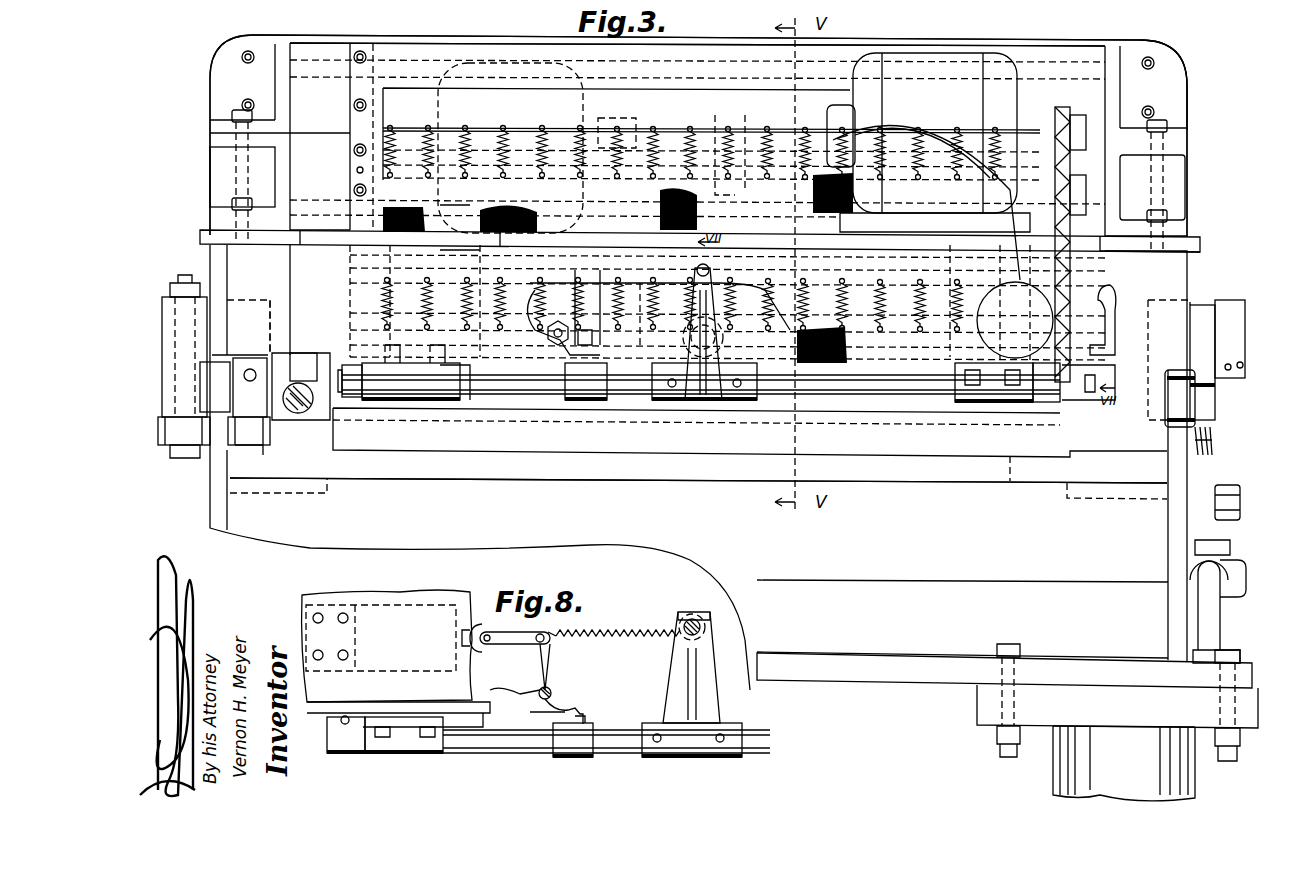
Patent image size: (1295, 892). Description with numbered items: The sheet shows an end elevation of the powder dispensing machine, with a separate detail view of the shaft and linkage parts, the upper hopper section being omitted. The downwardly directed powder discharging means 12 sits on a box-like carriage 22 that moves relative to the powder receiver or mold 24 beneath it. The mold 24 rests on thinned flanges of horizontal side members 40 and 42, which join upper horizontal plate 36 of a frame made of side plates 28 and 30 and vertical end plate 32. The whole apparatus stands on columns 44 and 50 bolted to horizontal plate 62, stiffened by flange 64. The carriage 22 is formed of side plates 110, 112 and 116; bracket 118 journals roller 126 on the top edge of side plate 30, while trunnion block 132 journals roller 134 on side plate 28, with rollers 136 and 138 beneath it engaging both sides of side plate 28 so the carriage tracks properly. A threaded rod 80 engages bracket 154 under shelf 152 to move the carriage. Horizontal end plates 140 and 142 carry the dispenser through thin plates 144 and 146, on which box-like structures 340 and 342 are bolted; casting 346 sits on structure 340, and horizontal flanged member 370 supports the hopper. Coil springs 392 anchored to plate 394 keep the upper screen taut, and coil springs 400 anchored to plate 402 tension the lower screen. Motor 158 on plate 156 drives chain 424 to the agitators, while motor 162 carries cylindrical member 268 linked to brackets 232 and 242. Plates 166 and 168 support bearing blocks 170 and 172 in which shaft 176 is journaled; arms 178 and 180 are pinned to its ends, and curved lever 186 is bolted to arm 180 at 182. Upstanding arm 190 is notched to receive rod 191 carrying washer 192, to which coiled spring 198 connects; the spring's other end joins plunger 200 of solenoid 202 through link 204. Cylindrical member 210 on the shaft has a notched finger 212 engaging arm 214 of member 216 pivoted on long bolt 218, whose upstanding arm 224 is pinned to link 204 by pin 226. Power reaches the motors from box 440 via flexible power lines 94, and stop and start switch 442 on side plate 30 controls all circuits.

In FIG. 3, the powder discharging means 12 is at (1205, 164).
In FIG. 3, the carriage 22 is at (1222, 283).
In FIG. 3, the powder receiver or mold 24 is at (1057, 452).
In FIG. 3, the side plate 28 is at (215, 487).
In FIG. 3, the side plate 30 is at (1190, 465).
In FIG. 3, the vertical end plate 32 is at (868, 576).
In FIG. 3, the upper horizontal plate 36 is at (698, 495).
In FIG. 3, the horizontal side member 40 is at (1050, 470).
In FIG. 3, the horizontal side member 42 is at (355, 465).
In FIG. 3, the column 44 is at (1085, 770).
In FIG. 3, the column 50 is at (1068, 757).
In FIG. 3, the horizontal plate 62 is at (1250, 665).
In FIG. 3, the flange 64 is at (892, 652).
In FIG. 3, the threaded rod 80 is at (300, 410).
In FIG. 3, the flexible power lines 94 is at (1213, 440).
In FIG. 3, the side plate 110 is at (230, 255).
In FIG. 8, the side plate 110 is at (530, 712).
In FIG. 3, the side plate 112 is at (1180, 265).
In FIG. 3, the side plate 116 is at (215, 270).
In FIG. 3, the bracket 118 is at (1226, 335).
In FIG. 3, the roller 126 is at (1212, 430).
In FIG. 3, the trunnion block 132 is at (165, 330).
In FIG. 3, the roller 134 is at (195, 452).
In FIG. 3, the roller 136 is at (160, 432).
In FIG. 3, the roller 138 is at (265, 442).
In FIG. 3, the horizontal end plate 140 is at (1180, 240).
In FIG. 3, the horizontal end plate 142 is at (215, 222).
In FIG. 3, the thin plate 144 is at (1187, 213).
In FIG. 3, the thin plate 146 is at (275, 233).
In FIG. 3, the shelf 152 is at (278, 345).
In FIG. 3, the bracket 154 is at (305, 360).
In FIG. 3, the horizontal plate 156 is at (922, 238).
In FIG. 3, the motor 158 is at (855, 64).
In FIG. 3, the motor 162 is at (560, 68).
In FIG. 3, the plate 166 is at (482, 365).
In FIG. 3, the plate 168 is at (930, 372).
In FIG. 3, the bearing block 170 is at (445, 400).
In FIG. 8, the bearing block 170 is at (425, 755).
In FIG. 3, the bearing block 172 is at (975, 402).
In FIG. 3, the shaft 176 is at (765, 400).
In FIG. 8, the shaft 176 is at (745, 758).
In FIG. 3, the arm 178 is at (350, 400).
In FIG. 8, the arm 178 is at (345, 755).
In FIG. 3, the arm 180 is at (1062, 396).
In FIG. 3, the bolt connection 182 is at (1090, 372).
In FIG. 3, the curved manually operable lever 186 is at (1110, 305).
In FIG. 3, the upstanding arm 190 is at (718, 325).
In FIG. 8, the upstanding arm 190 is at (708, 682).
In FIG. 3, the rod 191 is at (697, 268).
In FIG. 8, the rod 191 is at (695, 617).
In FIG. 8, the circular plate or washer 192 is at (706, 640).
In FIG. 8, the coiled spring 198 is at (640, 625).
In FIG. 3, the plunger 200 is at (520, 308).
In FIG. 8, the plunger 200 is at (472, 625).
In FIG. 3, the solenoid 202 is at (440, 250).
In FIG. 8, the solenoid 202 is at (400, 605).
In FIG. 3, the link 204 is at (522, 282).
In FIG. 8, the link 204 is at (500, 646).
In FIG. 3, the cylindrical member 210 is at (585, 400).
In FIG. 8, the cylindrical member 210 is at (572, 758).
In FIG. 8, the notched finger 212 is at (575, 718).
In FIG. 8, the arm 214 is at (580, 710).
In FIG. 8, the pivoted member 216 is at (552, 692).
In FIG. 3, the long bolt 218 is at (545, 295).
In FIG. 8, the long bolt 218 is at (528, 692).
In FIG. 3, the upstanding arm 224 is at (597, 315).
In FIG. 8, the upstanding arm 224 is at (552, 665).
In FIG. 8, the pin 226 is at (552, 634).
In FIG. 3, the bracket 232 is at (756, 143).
In FIG. 3, the bracket 242 is at (712, 125).
In FIG. 3, the cylindrical member 268 is at (625, 138).
In FIG. 3, the box-like structure 340 is at (1186, 195).
In FIG. 3, the box-like structure 342 is at (215, 158).
In FIG. 3, the casting 346 is at (1168, 86).
In FIG. 3, the horizontal flanged member 370 is at (690, 45).
In FIG. 3, the coil springs 392 is at (540, 155).
In FIG. 3, the plate 394 is at (403, 95).
In FIG. 3, the coil springs 400 is at (470, 300).
In FIG. 3, the plate 402 is at (641, 314).
In FIG. 3, the chain 424 is at (1075, 232).
In FIG. 3, the box 440 is at (1235, 305).
In FIG. 3, the stop and start switch 442 is at (1240, 515).